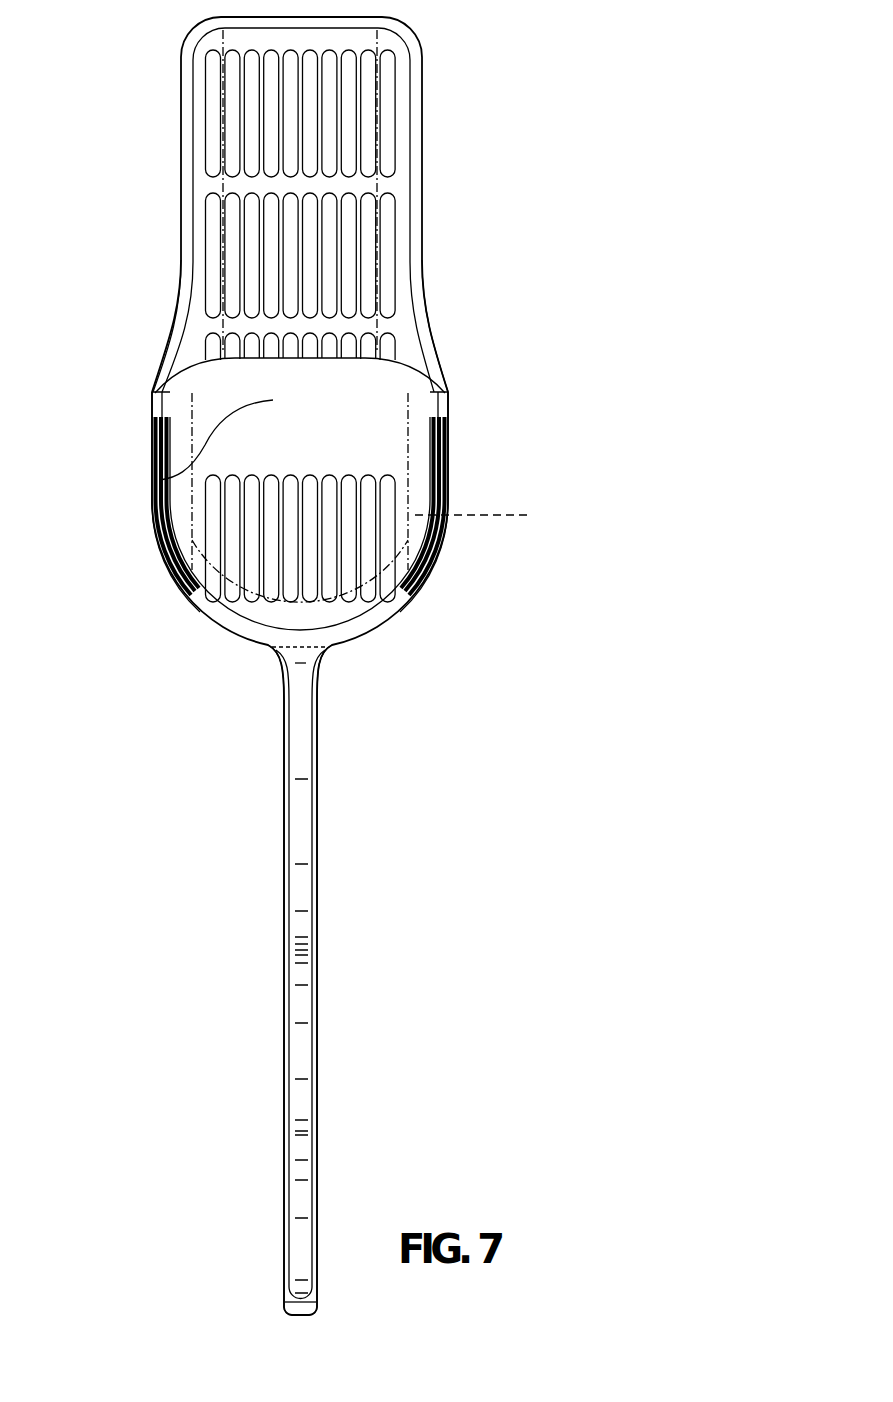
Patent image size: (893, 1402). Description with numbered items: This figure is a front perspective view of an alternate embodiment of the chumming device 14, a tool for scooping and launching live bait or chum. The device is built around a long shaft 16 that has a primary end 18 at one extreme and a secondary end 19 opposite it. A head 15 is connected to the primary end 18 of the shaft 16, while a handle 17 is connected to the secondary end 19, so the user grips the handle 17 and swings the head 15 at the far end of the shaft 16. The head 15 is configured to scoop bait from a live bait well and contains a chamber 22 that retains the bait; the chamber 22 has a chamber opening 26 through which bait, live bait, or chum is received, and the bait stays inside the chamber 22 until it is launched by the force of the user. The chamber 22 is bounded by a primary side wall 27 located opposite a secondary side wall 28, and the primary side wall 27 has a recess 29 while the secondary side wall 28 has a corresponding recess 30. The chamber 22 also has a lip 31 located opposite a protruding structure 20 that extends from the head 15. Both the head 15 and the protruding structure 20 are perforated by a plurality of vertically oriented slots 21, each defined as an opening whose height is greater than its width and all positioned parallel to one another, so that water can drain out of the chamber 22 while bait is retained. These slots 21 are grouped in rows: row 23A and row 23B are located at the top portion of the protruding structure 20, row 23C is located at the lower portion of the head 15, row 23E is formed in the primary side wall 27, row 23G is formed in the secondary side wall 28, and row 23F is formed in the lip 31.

The chumming device 14 is at (135, 205).
The head 15 is at (365, 155).
The shaft 16 is at (317, 885).
The handle 17 is at (310, 1205).
The primary end 18 is at (318, 688).
The secondary end 19 is at (300, 1117).
The protruding structure 20 is at (410, 128).
The vertically oriented slot 21 is at (207, 128).
The chamber 22 is at (486, 515).
The row of vertically oriented slots 23A is at (388, 100).
The row of vertically oriented slots 23B is at (390, 240).
The row of vertically oriented slots 23C is at (392, 348).
The row of vertically oriented slots 23E is at (153, 527).
The row of vertically oriented slots 23F is at (390, 570).
The row of vertically oriented slots 23G is at (446, 558).
The chamber opening 26 is at (452, 375).
The primary side wall 27 is at (153, 440).
The secondary side wall 28 is at (443, 425).
The recess 29 is at (160, 372).
The recess 30 is at (442, 360).
The lip 31 is at (165, 472).